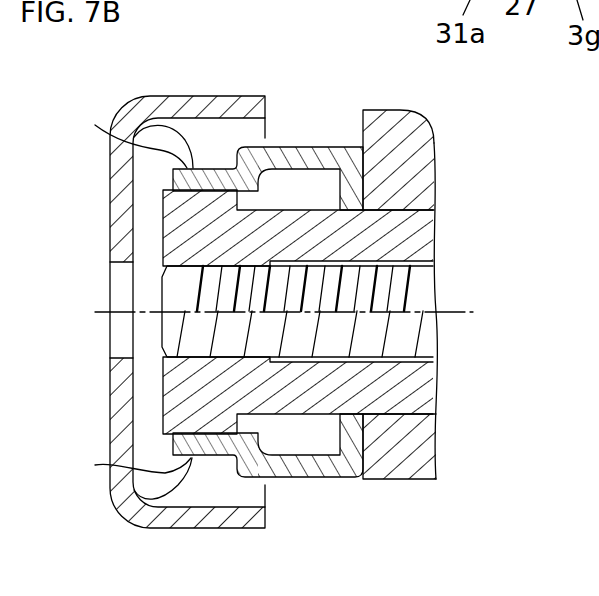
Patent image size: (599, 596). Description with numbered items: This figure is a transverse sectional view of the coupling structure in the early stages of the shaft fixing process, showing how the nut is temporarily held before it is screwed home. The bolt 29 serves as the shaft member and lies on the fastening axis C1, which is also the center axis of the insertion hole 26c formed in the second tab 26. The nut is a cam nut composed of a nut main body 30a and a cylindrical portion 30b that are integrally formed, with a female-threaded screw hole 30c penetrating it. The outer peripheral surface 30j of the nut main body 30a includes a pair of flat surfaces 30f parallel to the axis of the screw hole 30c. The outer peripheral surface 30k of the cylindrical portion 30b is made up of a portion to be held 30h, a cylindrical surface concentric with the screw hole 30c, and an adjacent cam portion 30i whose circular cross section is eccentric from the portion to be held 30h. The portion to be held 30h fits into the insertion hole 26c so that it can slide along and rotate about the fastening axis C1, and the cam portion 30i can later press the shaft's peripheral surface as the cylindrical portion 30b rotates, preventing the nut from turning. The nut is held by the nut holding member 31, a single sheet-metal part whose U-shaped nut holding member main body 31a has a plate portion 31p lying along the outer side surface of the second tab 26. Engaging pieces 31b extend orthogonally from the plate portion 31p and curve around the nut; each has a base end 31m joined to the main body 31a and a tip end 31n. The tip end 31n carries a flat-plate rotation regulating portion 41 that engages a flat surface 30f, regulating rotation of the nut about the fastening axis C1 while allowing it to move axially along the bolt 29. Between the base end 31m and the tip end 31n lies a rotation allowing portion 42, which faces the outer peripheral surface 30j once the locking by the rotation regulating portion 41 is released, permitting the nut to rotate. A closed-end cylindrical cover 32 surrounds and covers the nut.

The cover 32 is at (162, 529).
The nut holding member 31 is at (364, 457).
The nut holding member main body 31a is at (378, 452).
The engaging piece 31b is at (138, 125).
The base end 31m is at (338, 147).
The tip end 31n is at (114, 295).
The plate portion 31p is at (356, 421).
The nut main body 30a is at (170, 233).
The cylindrical portion 30b is at (434, 158).
The screw hole 30c is at (193, 266).
The flat surface 30f is at (192, 168).
The portion to be held 30h is at (310, 210).
The cam portion 30i is at (414, 210).
The outer peripheral surface 30j is at (167, 190).
The outer peripheral surface 30k is at (273, 210).
The second tab 26 is at (403, 480).
The insertion hole 26c is at (384, 211).
The bolt 29 is at (426, 293).
The rotation regulating portion 41 is at (208, 178).
The rotation allowing portion 42 is at (288, 147).
The fastening axis C1 is at (460, 313).